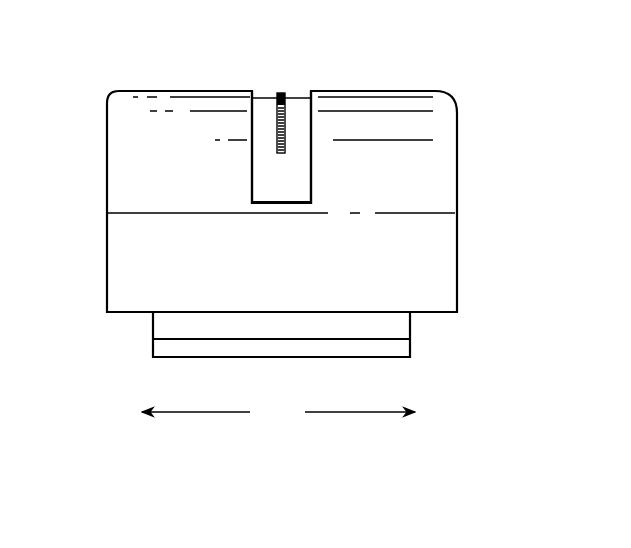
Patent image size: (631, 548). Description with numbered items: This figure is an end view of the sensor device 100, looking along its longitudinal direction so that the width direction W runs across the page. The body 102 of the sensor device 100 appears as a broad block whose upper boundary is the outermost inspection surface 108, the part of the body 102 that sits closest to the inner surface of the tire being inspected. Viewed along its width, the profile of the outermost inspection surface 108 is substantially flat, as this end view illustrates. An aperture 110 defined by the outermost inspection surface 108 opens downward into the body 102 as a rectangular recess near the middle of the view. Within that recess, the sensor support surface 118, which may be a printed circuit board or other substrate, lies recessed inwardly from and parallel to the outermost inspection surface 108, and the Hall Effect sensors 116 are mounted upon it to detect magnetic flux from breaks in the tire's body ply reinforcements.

The sensor device 100 is at (496, 98).
The body 102 is at (166, 324).
The outermost inspection surface 108 is at (134, 88).
The aperture 110 is at (320, 134).
The sensors 116 is at (281, 90).
The sensor support surface 118 is at (278, 178).